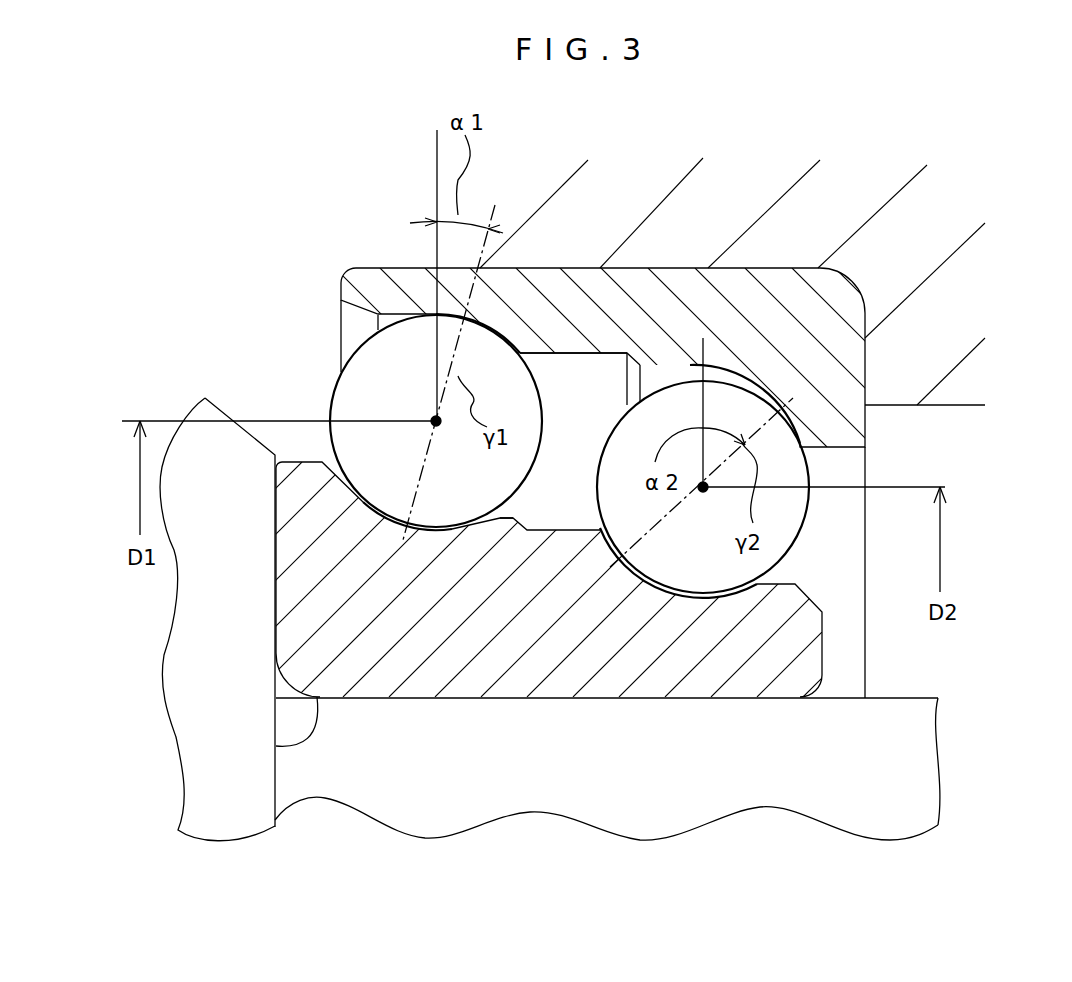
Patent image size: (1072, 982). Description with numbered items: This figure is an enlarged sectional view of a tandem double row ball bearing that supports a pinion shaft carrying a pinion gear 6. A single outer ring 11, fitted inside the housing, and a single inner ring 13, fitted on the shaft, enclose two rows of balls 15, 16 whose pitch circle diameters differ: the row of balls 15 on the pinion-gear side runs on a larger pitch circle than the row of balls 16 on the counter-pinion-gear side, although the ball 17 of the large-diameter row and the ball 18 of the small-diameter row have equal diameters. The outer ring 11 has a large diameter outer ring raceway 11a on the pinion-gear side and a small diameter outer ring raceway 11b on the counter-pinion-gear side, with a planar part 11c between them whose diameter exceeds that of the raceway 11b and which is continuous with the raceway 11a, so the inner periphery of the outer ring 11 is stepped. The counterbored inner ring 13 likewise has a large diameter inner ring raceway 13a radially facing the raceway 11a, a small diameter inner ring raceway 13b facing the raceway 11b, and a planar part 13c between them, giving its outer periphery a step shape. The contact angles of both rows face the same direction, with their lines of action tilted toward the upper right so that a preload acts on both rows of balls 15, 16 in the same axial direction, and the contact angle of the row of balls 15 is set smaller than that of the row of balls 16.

The pinion gear 6 is at (190, 720).
The outer ring 11 is at (597, 272).
The large diameter outer ring raceway 11a is at (475, 338).
The small diameter outer ring raceway 11b is at (772, 406).
The planar part 11c is at (570, 355).
The inner ring 13 is at (510, 675).
The large diameter inner ring raceway 13a is at (440, 545).
The small diameter inner ring raceway 13b is at (690, 565).
The planar part 13c is at (552, 518).
The row of balls 15 is at (296, 354).
The row of balls 16 is at (822, 464).
The ball 17 is at (387, 363).
The ball 18 is at (710, 410).